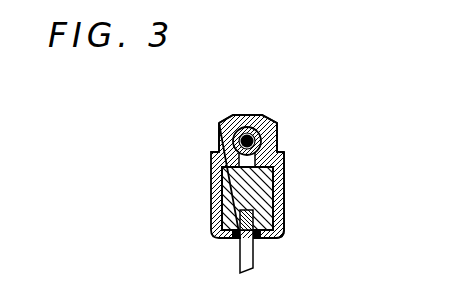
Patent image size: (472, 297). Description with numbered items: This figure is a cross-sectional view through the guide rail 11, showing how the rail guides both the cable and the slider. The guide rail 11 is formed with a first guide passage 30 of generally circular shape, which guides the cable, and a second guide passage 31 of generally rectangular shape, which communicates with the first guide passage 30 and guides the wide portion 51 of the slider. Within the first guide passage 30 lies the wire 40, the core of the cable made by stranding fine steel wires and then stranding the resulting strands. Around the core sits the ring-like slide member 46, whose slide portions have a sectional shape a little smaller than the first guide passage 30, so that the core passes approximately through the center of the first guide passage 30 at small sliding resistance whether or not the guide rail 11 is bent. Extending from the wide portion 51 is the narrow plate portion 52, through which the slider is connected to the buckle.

The guide rail 11 is at (227, 114).
The wire 40 is at (249, 114).
The ring-like slide member 46 is at (241, 140).
The first guide passage 30 is at (280, 151).
The second guide passage 31 is at (274, 202).
The wide portion 51 is at (237, 190).
The narrow plate portion 52 is at (245, 258).